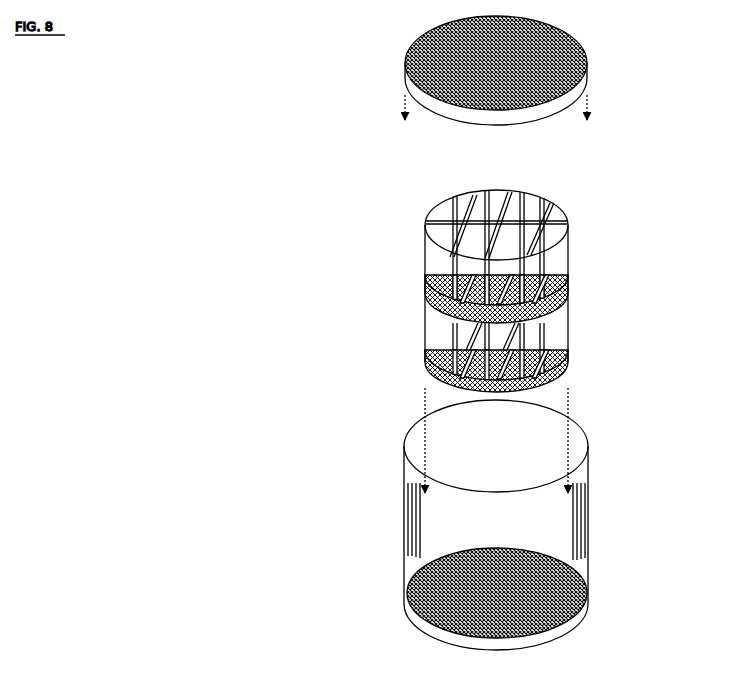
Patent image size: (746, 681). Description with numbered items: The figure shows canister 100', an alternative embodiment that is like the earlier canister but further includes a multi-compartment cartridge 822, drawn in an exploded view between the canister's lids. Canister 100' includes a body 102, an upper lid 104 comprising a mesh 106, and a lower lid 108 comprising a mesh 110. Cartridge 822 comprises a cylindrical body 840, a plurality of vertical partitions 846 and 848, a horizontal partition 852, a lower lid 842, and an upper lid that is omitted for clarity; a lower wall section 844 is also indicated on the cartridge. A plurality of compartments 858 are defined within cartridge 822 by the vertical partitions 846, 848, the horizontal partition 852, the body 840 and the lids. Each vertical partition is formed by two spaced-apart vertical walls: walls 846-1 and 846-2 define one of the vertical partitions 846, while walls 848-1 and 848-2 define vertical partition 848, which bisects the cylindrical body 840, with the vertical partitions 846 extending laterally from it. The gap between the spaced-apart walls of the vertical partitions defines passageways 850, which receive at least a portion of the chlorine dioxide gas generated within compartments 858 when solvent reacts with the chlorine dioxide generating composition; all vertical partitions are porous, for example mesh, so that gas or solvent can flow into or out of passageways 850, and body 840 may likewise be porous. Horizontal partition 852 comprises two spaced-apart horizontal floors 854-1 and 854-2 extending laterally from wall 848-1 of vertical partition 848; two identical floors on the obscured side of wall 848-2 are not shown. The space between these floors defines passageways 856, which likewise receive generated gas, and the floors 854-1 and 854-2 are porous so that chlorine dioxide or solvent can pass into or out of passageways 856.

The canister 100' is at (181, 273).
The body 102 is at (589, 470).
The upper lid 104 is at (588, 78).
The mesh 106 is at (405, 68).
The lower lid 108 is at (408, 622).
The mesh 110 is at (572, 577).
The multi-compartment cartridge 822 is at (320, 257).
The body 840 is at (425, 248).
The lower lid 842 is at (428, 377).
The lower housing section 844 is at (425, 342).
The vertical partitions 846 is at (510, 208).
The wall 846-1 is at (460, 204).
The wall 846-2 is at (487, 212).
The vertical partition 848 is at (549, 277).
The wall 848-1 is at (567, 228).
The wall 848-2 is at (563, 207).
The passageways 850 is at (514, 183).
The horizontal partition 852 is at (491, 296).
The floor 854-1 is at (567, 283).
The floor 854-2 is at (567, 307).
The passageways 856 is at (425, 287).
The compartments 858 is at (473, 237).